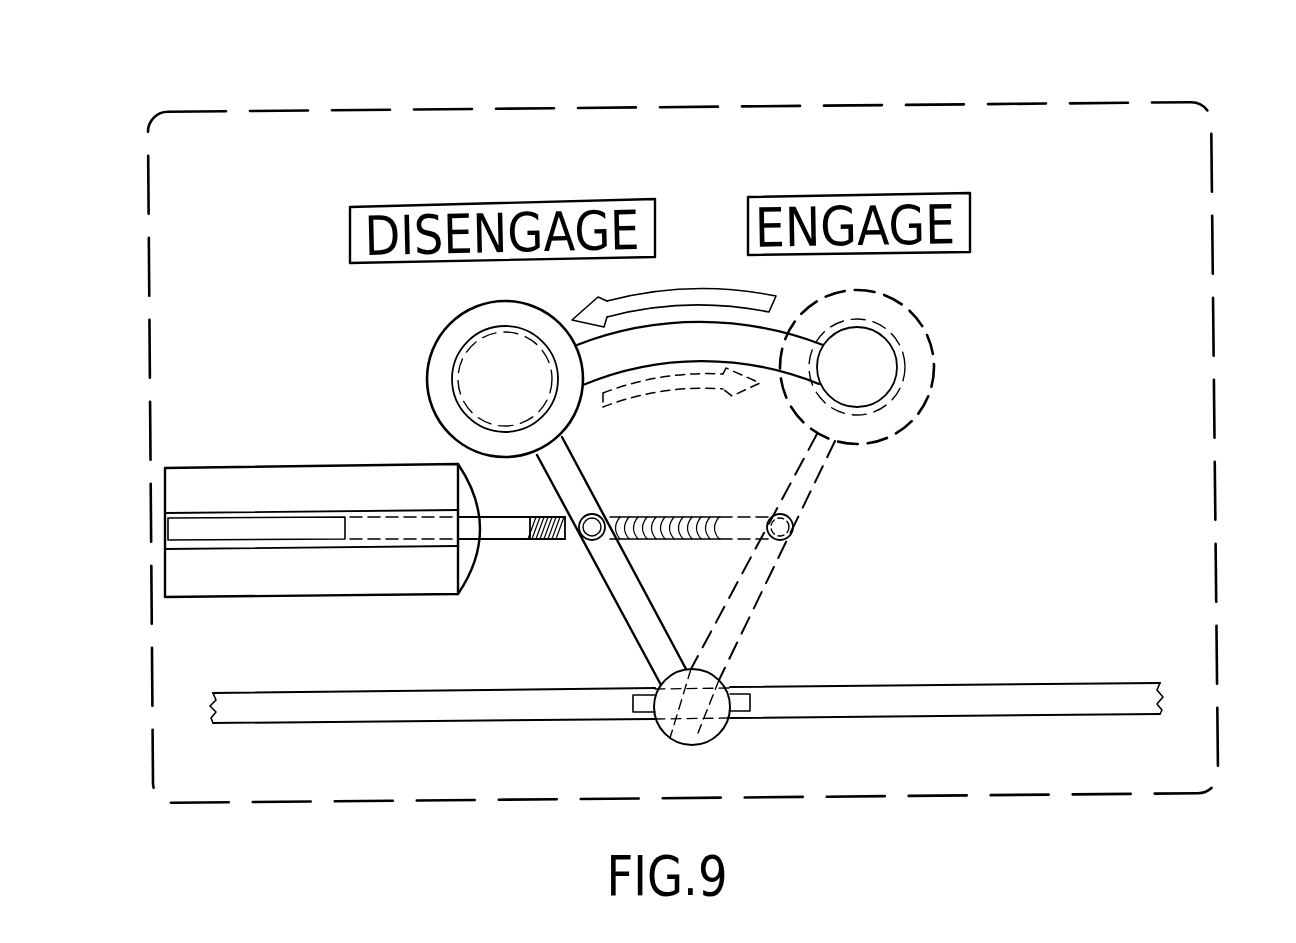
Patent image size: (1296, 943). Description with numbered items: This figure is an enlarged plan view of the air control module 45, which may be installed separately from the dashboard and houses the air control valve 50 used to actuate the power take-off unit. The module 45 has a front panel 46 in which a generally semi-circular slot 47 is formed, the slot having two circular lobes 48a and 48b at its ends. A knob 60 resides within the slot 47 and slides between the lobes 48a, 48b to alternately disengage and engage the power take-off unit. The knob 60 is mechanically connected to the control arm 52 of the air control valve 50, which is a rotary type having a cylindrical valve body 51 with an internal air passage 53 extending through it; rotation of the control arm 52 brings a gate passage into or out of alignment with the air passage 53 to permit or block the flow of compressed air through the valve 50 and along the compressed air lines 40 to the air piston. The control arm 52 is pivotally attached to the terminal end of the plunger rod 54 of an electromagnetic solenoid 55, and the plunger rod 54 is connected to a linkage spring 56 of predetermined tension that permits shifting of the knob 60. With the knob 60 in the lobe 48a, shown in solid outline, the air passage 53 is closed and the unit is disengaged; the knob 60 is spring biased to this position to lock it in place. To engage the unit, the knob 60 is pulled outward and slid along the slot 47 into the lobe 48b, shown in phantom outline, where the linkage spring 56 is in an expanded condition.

The compressed air lines 40 is at (452, 725).
The air control module 45 is at (718, 81).
The front panel 46 is at (1215, 205).
The semi-circular slot 47 is at (670, 353).
The circular lobe 48a is at (450, 373).
The circular lobe 48b is at (893, 358).
The air control valve 50 is at (770, 661).
The cylindrical valve body 51 is at (723, 732).
The control arm 52 is at (627, 613).
The air passage 53 is at (655, 682).
The plunger rod 54 is at (497, 541).
The electromagnetic solenoid 55 is at (278, 442).
The linkage spring 56 is at (558, 514).
The knob 60 is at (435, 348).